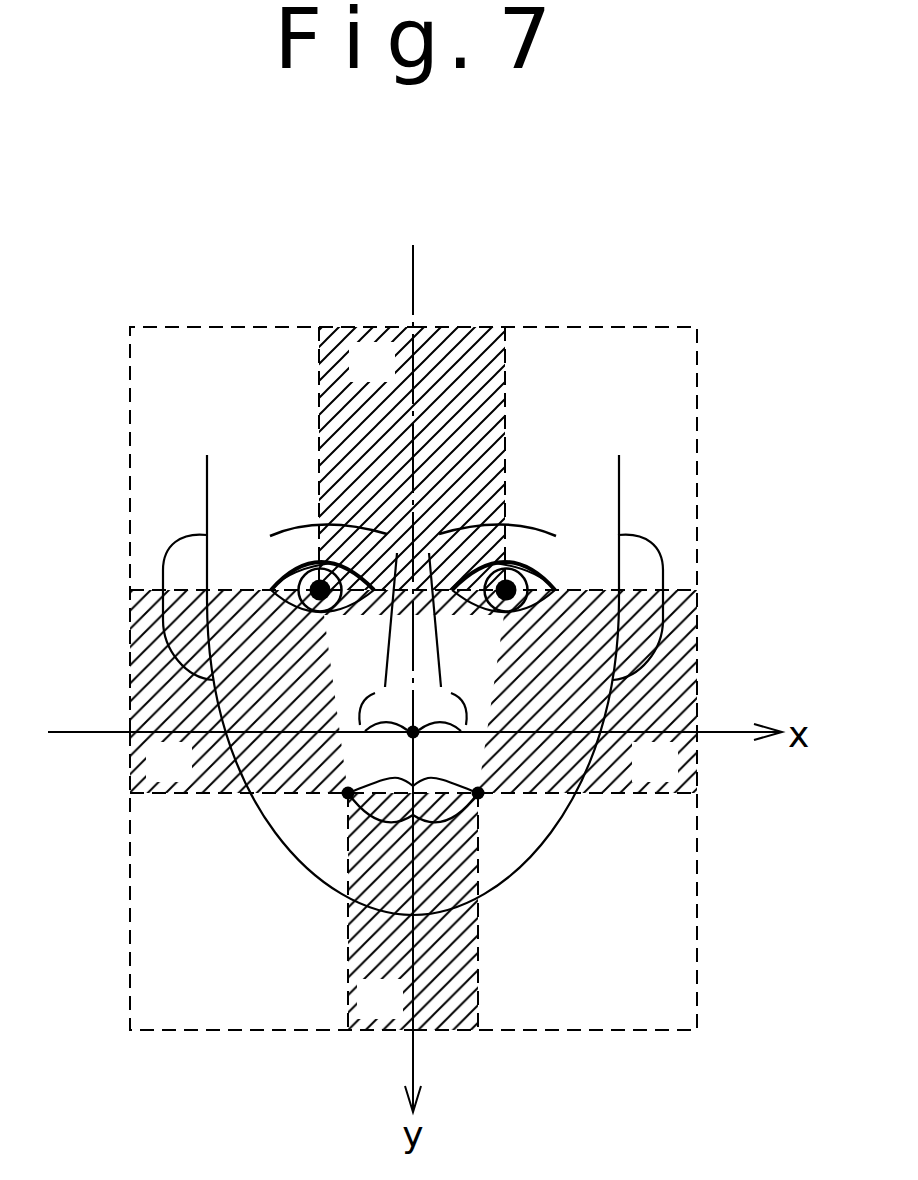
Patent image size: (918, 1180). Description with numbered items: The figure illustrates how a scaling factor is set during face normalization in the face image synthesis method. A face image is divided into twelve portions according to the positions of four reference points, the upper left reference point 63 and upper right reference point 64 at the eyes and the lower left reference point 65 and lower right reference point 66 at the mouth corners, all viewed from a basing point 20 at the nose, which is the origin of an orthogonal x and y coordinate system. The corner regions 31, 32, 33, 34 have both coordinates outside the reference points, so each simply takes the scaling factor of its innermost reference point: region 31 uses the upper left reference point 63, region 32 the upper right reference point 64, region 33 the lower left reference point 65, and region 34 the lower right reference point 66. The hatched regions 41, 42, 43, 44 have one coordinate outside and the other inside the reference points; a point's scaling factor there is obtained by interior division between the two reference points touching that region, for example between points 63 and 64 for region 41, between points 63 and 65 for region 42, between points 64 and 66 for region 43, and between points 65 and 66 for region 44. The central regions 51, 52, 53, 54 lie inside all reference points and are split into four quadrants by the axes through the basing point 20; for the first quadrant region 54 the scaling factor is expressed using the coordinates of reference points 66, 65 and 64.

The basing point 20 is at (413, 732).
The region 31 is at (148, 378).
The region 32 is at (636, 378).
The region 33 is at (151, 1015).
The region 34 is at (636, 1015).
The region 41 is at (353, 378).
The region 42 is at (150, 778).
The region 43 is at (636, 778).
The region 44 is at (361, 1015).
The region 51 is at (341, 668).
The region 52 is at (446, 668).
The region 53 is at (356, 778).
The region 54 is at (428, 778).
The upper left reference point 63 is at (303, 562).
The upper right reference point 64 is at (525, 562).
The lower left reference point 65 is at (348, 793).
The lower right reference point 66 is at (478, 793).